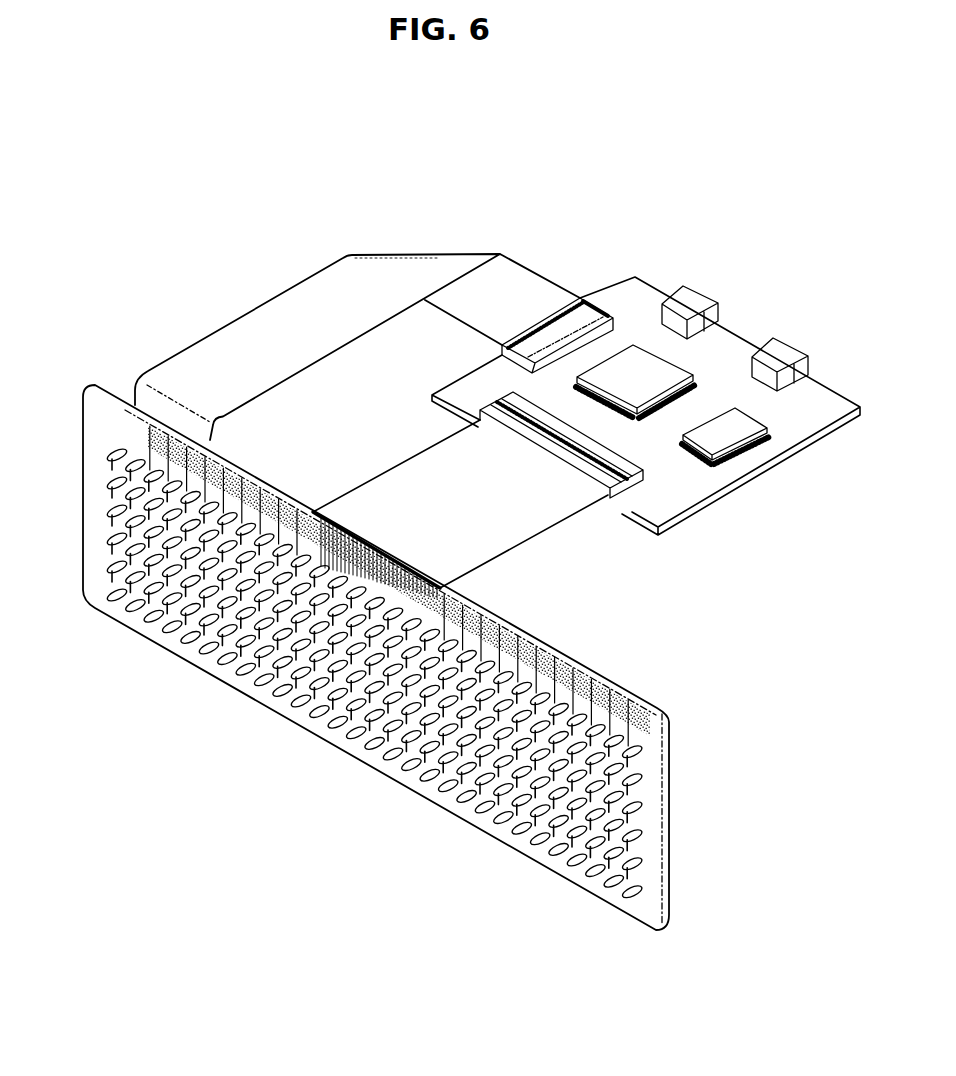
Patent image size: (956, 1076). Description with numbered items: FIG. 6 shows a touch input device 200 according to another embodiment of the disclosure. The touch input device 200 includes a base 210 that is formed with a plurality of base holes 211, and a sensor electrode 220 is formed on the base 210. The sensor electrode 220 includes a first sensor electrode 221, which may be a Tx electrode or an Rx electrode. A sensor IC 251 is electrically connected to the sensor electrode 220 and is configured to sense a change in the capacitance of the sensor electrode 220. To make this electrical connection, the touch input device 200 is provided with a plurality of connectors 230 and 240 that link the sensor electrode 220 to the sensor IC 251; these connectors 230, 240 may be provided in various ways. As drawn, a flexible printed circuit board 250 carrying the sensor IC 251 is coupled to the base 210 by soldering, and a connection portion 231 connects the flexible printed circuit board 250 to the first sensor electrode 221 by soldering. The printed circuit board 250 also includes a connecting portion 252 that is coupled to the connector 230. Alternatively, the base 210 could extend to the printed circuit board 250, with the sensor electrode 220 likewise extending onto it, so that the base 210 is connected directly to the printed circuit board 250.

The touch input device 200 is at (366, 149).
The base 210 is at (93, 368).
The base hole 211 is at (118, 597).
The sensor electrode 220 is at (326, 657).
The first sensor electrode 221 is at (132, 436).
The connector 230 is at (551, 532).
The connection portion 231 is at (443, 588).
The connector 240 is at (397, 272).
The flexible printed circuit board 250 is at (611, 284).
The sensor IC 251 is at (642, 357).
The connecting portion 252 is at (645, 482).